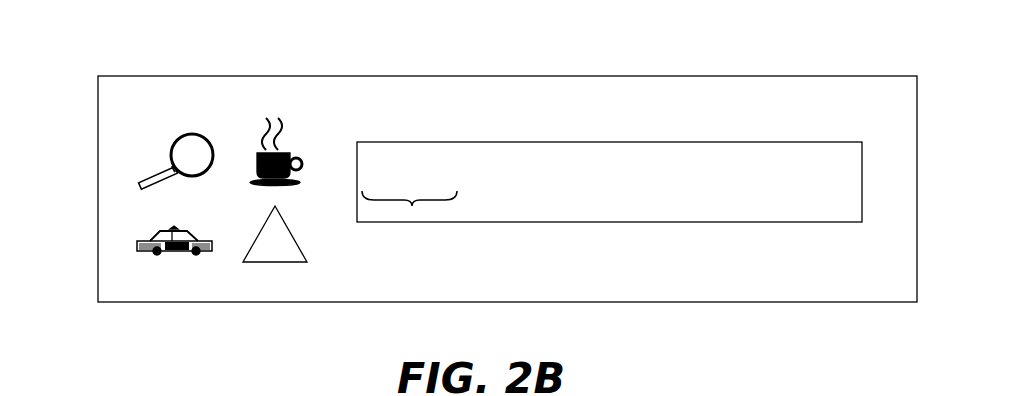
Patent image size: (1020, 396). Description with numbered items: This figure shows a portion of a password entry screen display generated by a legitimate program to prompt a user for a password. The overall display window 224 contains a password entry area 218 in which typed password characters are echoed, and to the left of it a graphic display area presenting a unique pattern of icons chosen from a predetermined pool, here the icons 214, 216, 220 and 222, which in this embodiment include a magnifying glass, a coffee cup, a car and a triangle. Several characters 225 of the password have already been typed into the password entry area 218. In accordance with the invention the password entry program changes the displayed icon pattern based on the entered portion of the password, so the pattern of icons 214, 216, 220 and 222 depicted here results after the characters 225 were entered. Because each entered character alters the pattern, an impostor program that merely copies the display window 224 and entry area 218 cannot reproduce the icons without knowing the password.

The icon 214 is at (188, 148).
The icon 216 is at (278, 150).
The text entry field 218 is at (525, 185).
The icon 220 is at (143, 242).
The icon 222 is at (275, 245).
The display window 224 is at (657, 265).
The characters 225 is at (412, 207).